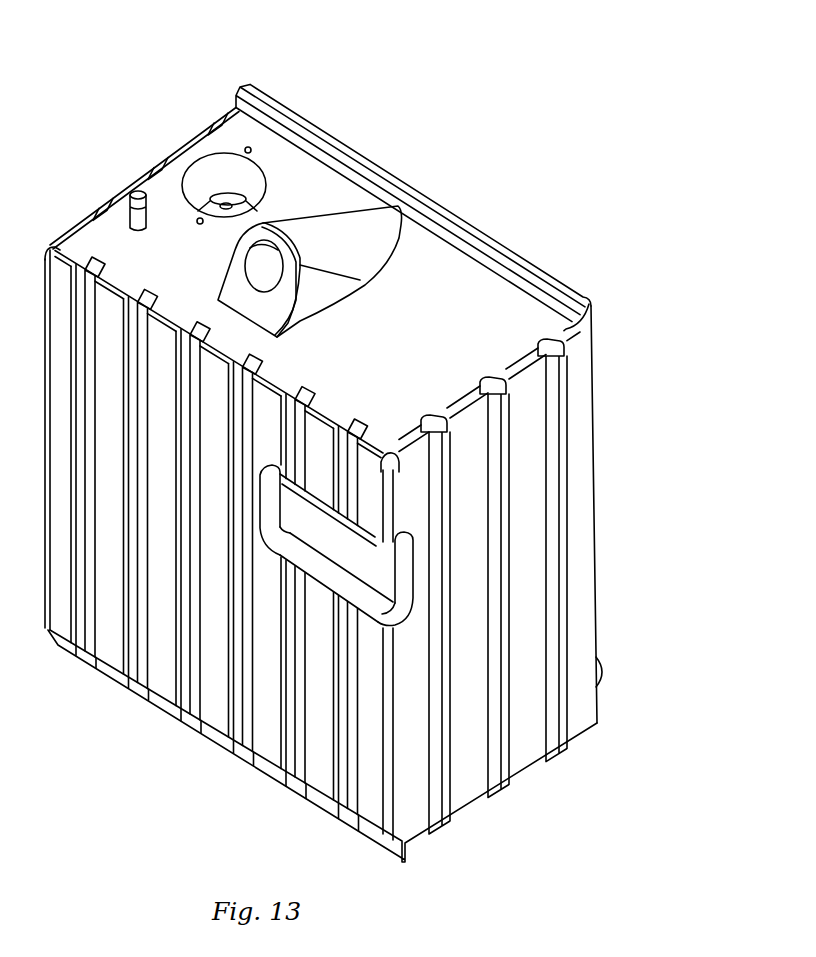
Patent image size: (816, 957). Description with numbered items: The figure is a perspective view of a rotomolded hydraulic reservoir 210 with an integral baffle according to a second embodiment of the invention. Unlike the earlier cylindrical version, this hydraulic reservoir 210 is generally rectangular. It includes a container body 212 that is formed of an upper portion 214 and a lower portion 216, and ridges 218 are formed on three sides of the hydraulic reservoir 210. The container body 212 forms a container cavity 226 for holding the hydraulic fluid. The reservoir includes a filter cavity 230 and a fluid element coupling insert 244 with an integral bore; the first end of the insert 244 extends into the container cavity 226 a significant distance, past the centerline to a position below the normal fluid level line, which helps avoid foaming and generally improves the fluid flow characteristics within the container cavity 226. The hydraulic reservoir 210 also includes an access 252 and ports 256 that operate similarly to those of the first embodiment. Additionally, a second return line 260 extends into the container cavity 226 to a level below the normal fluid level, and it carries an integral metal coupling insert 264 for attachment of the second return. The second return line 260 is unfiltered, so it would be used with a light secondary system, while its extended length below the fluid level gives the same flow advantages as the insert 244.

The hydraulic reservoir 210 is at (617, 192).
The container body 212 is at (432, 341).
The upper portion 214 is at (654, 301).
The lower portion 216 is at (654, 499).
The ridges 218 is at (194, 716).
The container cavity 226 is at (392, 401).
The filter cavity 230 is at (242, 178).
The fluid element coupling insert 244 is at (246, 180).
The access 252 is at (255, 280).
The ports 256 is at (608, 672).
The second return line 260 is at (118, 206).
The integral metal coupling insert 264 is at (127, 224).